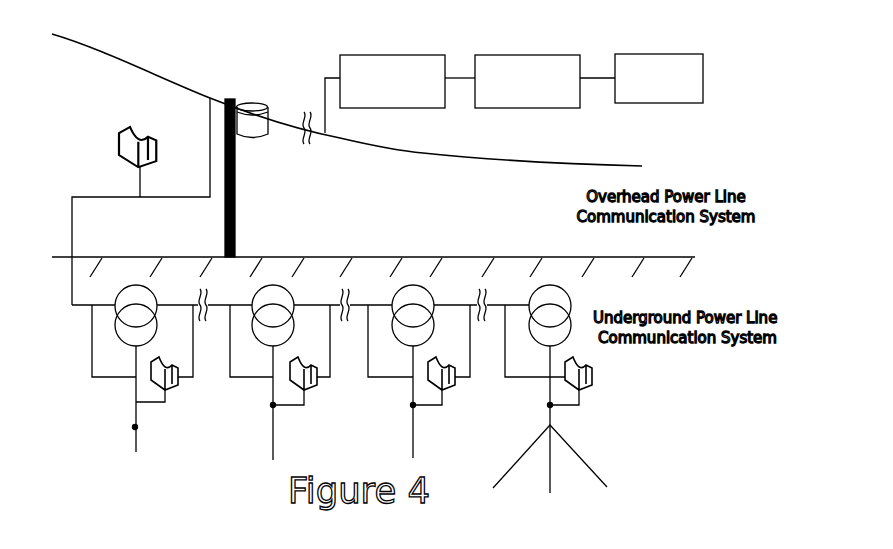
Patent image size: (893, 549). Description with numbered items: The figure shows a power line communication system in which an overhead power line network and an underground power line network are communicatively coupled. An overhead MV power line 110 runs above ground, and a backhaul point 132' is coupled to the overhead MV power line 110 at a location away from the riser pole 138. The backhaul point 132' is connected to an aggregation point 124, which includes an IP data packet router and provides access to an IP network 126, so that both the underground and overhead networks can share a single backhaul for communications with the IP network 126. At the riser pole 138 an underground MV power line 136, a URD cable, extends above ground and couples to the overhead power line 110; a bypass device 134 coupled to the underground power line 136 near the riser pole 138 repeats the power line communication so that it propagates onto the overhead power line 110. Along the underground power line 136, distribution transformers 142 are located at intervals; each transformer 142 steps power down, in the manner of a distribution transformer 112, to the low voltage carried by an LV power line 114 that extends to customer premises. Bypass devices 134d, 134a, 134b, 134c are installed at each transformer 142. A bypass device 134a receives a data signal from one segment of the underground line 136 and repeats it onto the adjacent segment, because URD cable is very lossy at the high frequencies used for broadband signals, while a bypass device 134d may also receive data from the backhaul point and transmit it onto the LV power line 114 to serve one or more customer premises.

The MV power line 110 is at (425, 153).
The distribution transformer 112 is at (254, 102).
The LV power line 114 is at (133, 433).
The aggregation point 124 is at (493, 55).
The IP network 126 is at (627, 53).
The backhaul point 132' is at (392, 69).
The bypass device 134 is at (128, 127).
The bypass device 134a is at (312, 388).
The bypass device 134b is at (452, 388).
The bypass device 134c is at (593, 392).
The bypass device 134d is at (172, 388).
The underground MV power line 136 is at (73, 251).
The riser pole 138 is at (237, 203).
The distribution transformer 142 is at (568, 337).